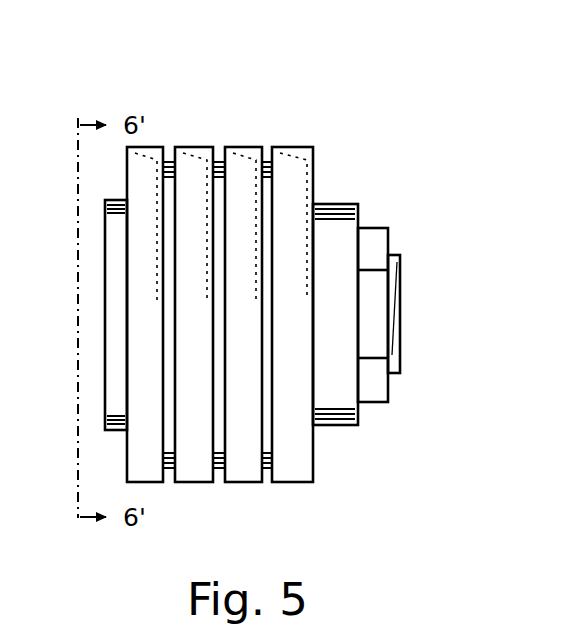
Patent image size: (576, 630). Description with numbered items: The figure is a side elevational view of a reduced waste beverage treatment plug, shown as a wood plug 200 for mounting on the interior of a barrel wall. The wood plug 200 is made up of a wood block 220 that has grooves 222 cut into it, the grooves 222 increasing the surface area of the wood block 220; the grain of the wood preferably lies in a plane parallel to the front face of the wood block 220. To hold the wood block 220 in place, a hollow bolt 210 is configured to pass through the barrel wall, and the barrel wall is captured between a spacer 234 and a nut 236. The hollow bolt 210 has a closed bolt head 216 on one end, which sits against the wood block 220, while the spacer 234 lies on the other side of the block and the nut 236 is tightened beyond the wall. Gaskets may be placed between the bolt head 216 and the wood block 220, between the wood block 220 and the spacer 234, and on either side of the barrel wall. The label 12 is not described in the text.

The wood plug 200 is at (246, 280).
The wood block 220 is at (245, 166).
The grooves 222 is at (266, 482).
The closed bolt head 216 is at (118, 272).
The spacer 234 is at (350, 206).
The nut 236 is at (370, 393).
The hollow bolt 210 is at (403, 338).
The section axis 12 is at (39, 318).